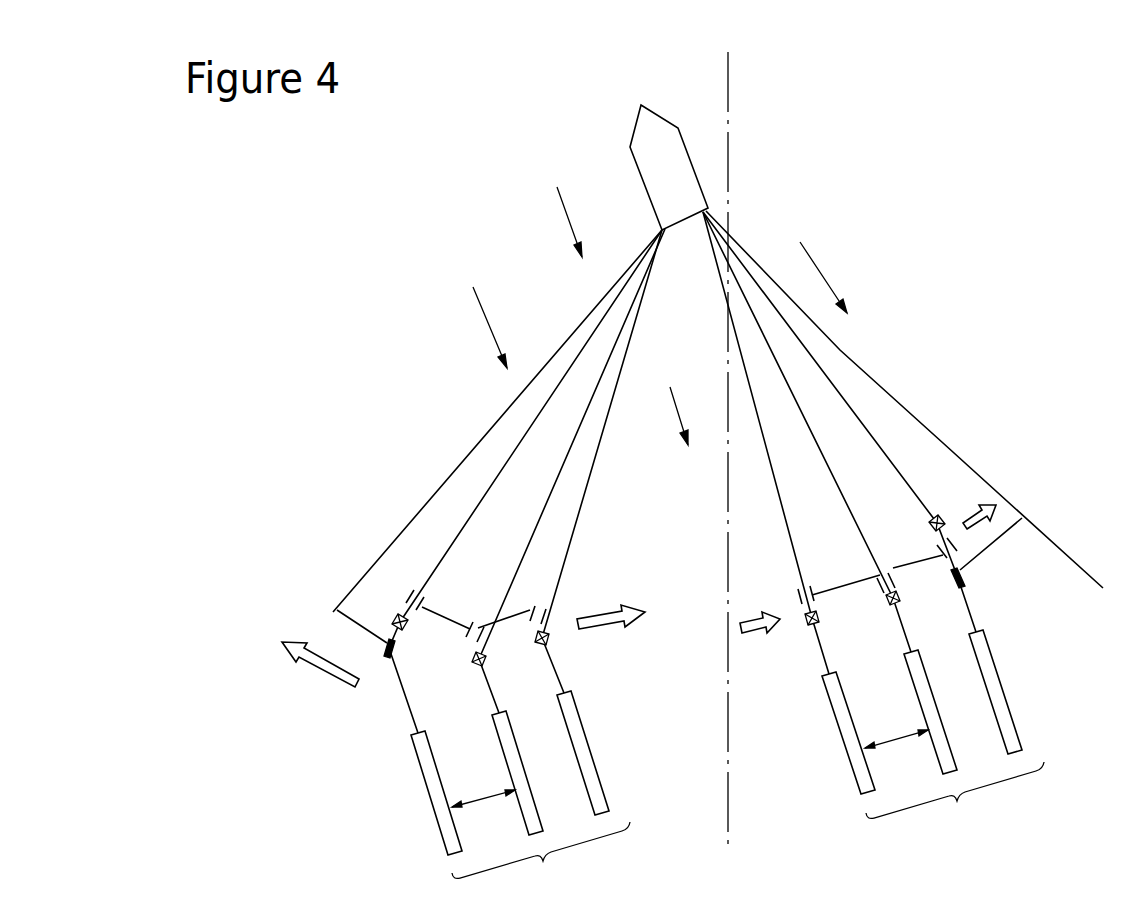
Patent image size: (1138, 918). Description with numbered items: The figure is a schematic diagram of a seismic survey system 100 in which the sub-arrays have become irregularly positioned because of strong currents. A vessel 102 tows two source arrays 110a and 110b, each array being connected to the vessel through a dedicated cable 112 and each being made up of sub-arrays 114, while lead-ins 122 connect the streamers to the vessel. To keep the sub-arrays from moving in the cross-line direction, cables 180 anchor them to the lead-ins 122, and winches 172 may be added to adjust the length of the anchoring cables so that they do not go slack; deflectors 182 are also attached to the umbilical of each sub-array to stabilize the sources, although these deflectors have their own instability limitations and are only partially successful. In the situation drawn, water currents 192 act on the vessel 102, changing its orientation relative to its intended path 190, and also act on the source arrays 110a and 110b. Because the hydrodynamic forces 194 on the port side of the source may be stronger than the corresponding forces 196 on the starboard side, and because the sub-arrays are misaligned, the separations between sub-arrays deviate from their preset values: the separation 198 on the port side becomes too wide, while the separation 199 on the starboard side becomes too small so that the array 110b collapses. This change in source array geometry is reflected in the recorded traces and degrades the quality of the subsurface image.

The system 100 is at (944, 88).
The vessel 102 is at (640, 172).
The source array 110a is at (541, 791).
The source array 110b is at (933, 731).
The dedicated cable 112 is at (582, 500).
The sub-array 114 is at (425, 787).
The lead-in 122 is at (458, 463).
The winch 172 is at (392, 660).
The cable 180 is at (440, 620).
The deflector 182 is at (398, 618).
The intended path 190 is at (728, 80).
The water current 192 is at (565, 213).
The hydrodynamic force 194 is at (593, 607).
The hydrodynamic force 196 is at (993, 500).
The separation 198 is at (485, 800).
The separation 199 is at (897, 737).